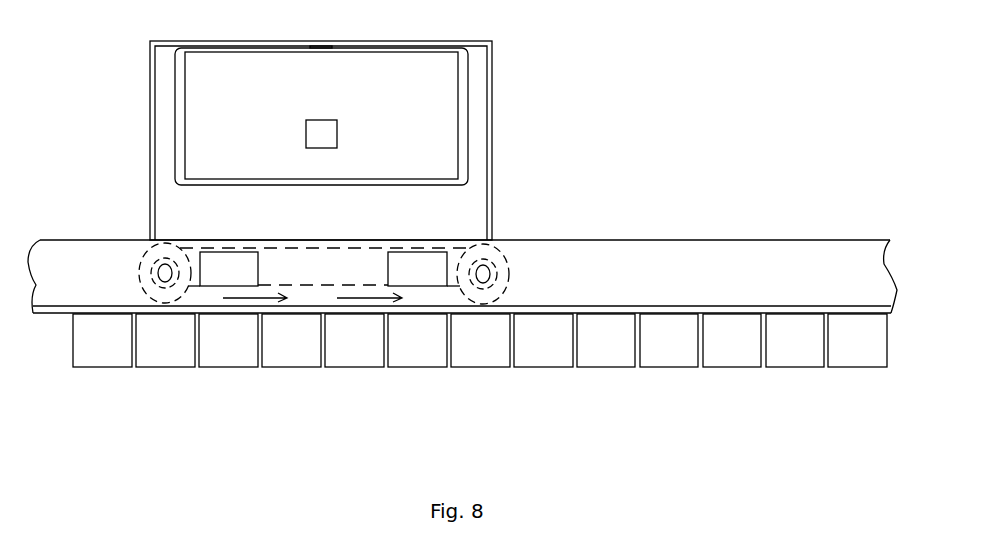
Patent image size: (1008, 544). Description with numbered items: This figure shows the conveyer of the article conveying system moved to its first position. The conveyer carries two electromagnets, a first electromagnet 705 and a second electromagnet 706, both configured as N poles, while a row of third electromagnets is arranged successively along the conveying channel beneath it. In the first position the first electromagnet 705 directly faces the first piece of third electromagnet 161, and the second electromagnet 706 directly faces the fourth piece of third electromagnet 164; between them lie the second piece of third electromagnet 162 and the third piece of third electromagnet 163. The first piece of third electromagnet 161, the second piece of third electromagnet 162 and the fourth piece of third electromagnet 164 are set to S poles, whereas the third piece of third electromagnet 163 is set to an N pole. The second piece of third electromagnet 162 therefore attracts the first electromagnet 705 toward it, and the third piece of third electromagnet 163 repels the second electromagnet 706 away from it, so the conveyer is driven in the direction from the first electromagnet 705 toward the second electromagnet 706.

The first electromagnet 705 is at (212, 281).
The second electromagnet 706 is at (437, 280).
The first piece of third electromagnet 161 is at (231, 350).
The second piece of third electromagnet 162 is at (297, 353).
The third piece of third electromagnet 163 is at (352, 357).
The fourth piece of third electromagnet 164 is at (413, 355).